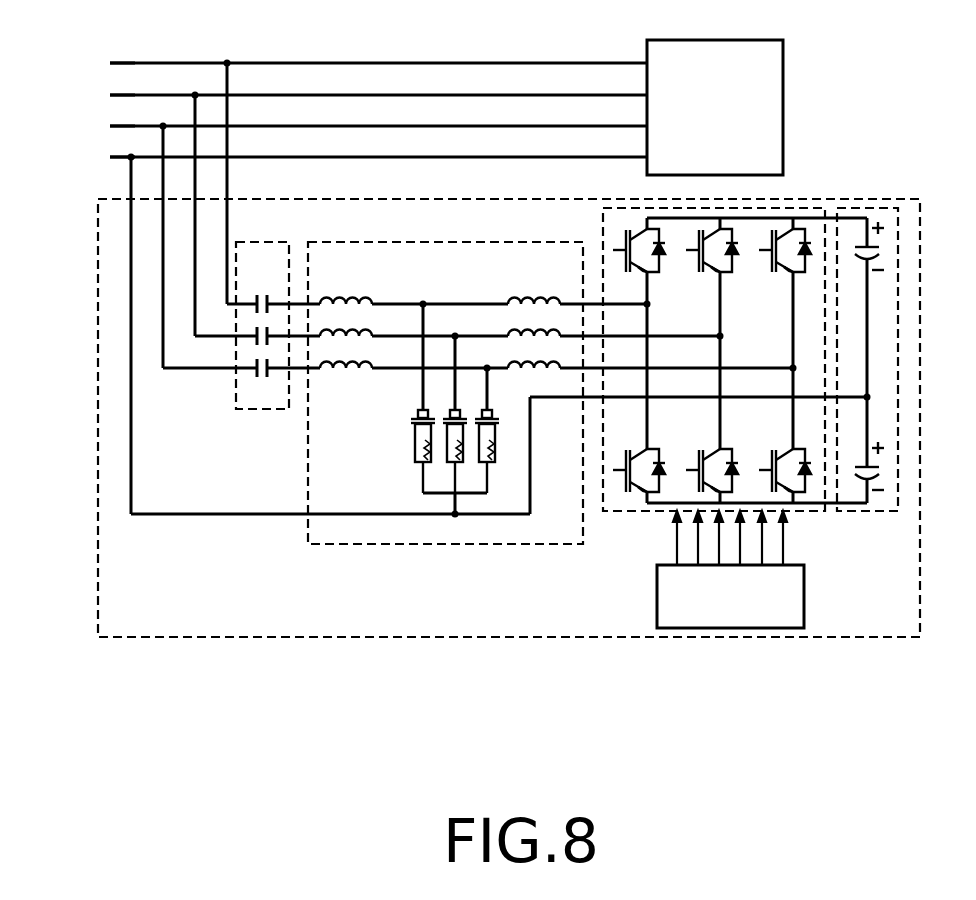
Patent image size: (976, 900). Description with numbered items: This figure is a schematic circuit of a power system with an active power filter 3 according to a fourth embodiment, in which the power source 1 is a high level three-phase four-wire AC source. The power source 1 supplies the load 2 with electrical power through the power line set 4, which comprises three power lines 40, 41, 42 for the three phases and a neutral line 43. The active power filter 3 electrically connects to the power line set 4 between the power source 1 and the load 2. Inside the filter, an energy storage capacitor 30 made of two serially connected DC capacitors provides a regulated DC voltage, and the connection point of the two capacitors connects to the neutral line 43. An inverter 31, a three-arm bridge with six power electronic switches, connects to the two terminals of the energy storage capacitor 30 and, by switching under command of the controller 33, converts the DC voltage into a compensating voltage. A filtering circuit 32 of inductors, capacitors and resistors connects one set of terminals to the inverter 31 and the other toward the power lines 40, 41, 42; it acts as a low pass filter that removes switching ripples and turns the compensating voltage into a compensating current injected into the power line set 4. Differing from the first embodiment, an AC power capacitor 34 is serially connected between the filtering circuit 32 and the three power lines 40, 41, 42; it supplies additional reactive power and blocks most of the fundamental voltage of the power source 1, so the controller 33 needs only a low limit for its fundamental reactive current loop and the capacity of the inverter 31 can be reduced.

The power source 1 is at (81, 101).
The load 2 is at (762, 135).
The active power filter 3 is at (192, 618).
The power line set 4 is at (378, 87).
The power line 40 is at (378, 49).
The power line 41 is at (378, 80).
The power line 42 is at (378, 112).
The neutral line 43 is at (378, 143).
The energy storage capacitor 30 is at (752, 398).
The inverter 31 is at (625, 503).
The filtering circuit 32 is at (408, 530).
The controller 33 is at (780, 618).
The AC power capacitor 34 is at (239, 400).